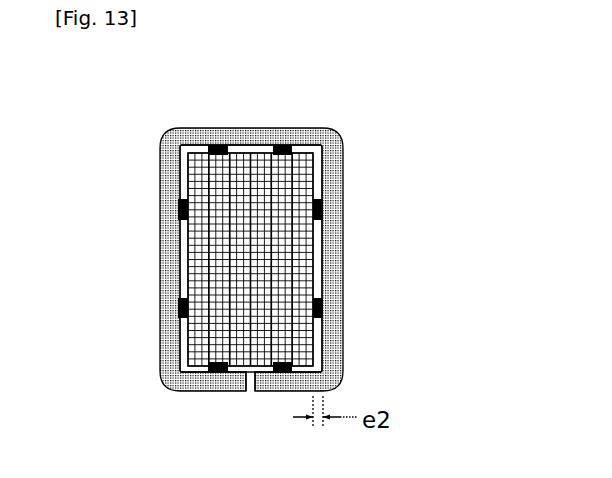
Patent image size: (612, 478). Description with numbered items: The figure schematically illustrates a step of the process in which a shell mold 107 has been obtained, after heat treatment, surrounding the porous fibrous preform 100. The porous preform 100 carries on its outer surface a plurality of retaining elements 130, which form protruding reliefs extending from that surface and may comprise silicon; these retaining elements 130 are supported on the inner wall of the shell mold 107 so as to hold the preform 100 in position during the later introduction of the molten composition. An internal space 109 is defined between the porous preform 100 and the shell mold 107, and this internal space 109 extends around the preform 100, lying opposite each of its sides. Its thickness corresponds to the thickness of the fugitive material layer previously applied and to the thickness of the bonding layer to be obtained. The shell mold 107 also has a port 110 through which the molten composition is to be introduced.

The shell mold 107 is at (250, 136).
The porous fibrous preform 100 is at (313, 172).
The internal space 109 is at (320, 276).
The retaining elements 130 is at (178, 212).
The port 110 is at (254, 390).